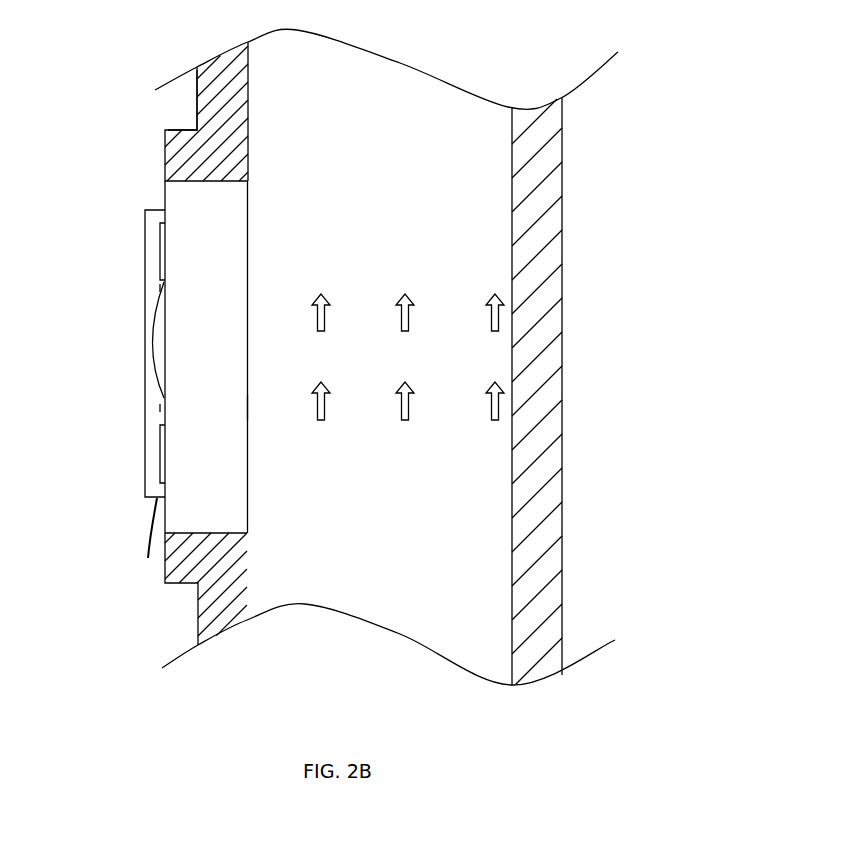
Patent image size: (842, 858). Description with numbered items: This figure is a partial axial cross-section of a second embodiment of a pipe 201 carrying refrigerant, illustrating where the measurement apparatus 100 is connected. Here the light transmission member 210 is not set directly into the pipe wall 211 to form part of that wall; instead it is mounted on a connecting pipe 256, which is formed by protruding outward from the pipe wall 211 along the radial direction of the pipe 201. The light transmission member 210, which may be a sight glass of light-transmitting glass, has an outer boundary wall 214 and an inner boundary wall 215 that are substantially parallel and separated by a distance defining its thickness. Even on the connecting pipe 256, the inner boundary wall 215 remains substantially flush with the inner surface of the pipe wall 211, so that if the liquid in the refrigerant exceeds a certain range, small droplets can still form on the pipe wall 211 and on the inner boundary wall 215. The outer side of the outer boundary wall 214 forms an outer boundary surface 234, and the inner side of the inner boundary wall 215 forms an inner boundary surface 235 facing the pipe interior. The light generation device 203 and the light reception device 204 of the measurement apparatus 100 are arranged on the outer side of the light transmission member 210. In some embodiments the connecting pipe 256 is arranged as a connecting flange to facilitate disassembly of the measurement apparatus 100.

The measurement apparatus 100 is at (88, 209).
The pipe 201 is at (355, 590).
The light generation device 203 is at (165, 246).
The light reception device 204 is at (158, 344).
The light transmission member 210 is at (172, 197).
The pipe wall 211 is at (543, 168).
The outer boundary wall 214 is at (163, 289).
The inner boundary wall 215 is at (247, 407).
The outer boundary surface 234 is at (164, 513).
The inner boundary surface 235 is at (247, 517).
The connecting pipe 256 is at (175, 135).